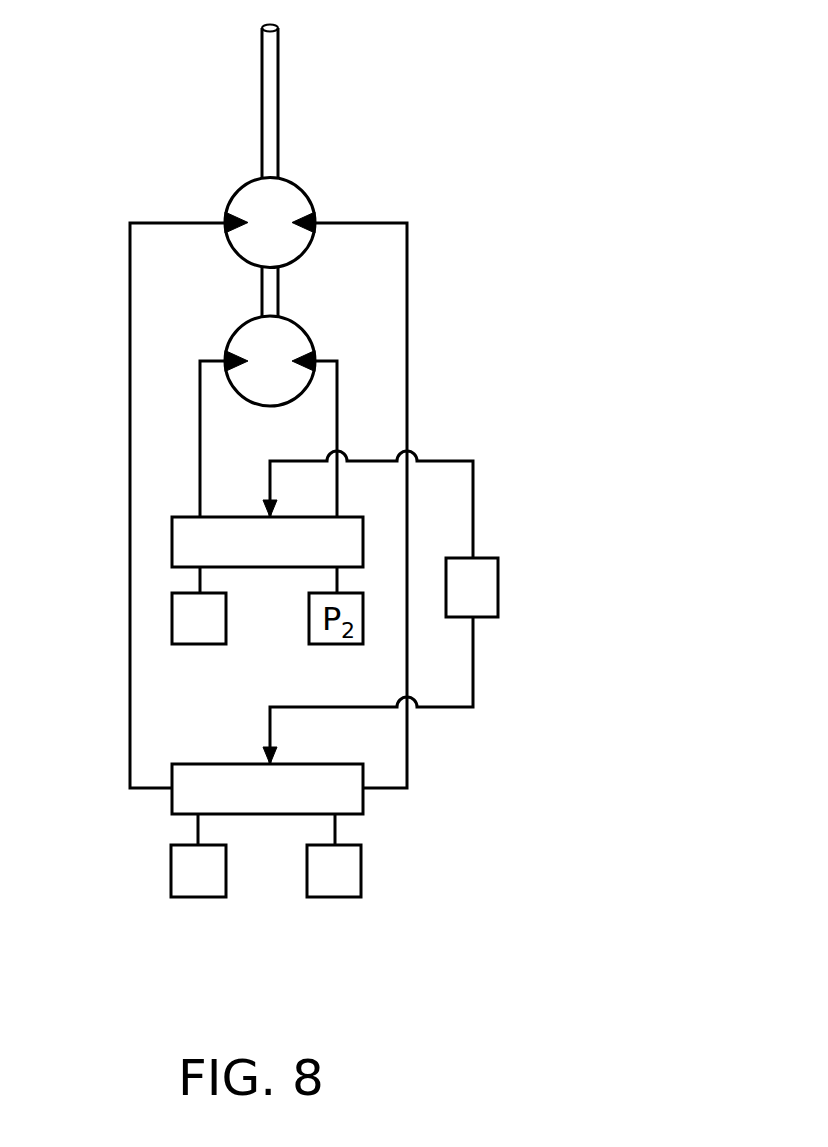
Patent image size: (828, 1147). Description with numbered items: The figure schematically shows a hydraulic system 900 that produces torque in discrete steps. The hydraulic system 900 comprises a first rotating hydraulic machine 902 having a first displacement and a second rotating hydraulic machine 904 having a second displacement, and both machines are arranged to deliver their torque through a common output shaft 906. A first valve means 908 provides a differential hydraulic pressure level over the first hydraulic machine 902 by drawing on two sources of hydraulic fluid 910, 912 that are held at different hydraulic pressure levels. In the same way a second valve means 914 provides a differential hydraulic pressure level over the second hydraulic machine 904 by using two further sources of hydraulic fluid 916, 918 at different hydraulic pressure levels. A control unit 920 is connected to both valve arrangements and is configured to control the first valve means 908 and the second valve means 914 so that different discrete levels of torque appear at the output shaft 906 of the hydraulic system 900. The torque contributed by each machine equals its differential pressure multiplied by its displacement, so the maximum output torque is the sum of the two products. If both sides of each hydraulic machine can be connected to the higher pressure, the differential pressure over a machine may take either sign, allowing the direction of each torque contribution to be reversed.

The hydraulic system 900 is at (602, 130).
The first rotating hydraulic machine 902 is at (310, 337).
The second rotating hydraulic machine 904 is at (305, 192).
The common output shaft 906 is at (272, 70).
The first valve means 908 is at (172, 543).
The source of hydraulic fluid 910 is at (172, 625).
The source of hydraulic fluid 912 is at (363, 612).
The second valve means 914 is at (263, 814).
The source of hydraulic fluid 916 is at (361, 870).
The source of hydraulic fluid 918 is at (171, 870).
The control unit 920 is at (498, 588).